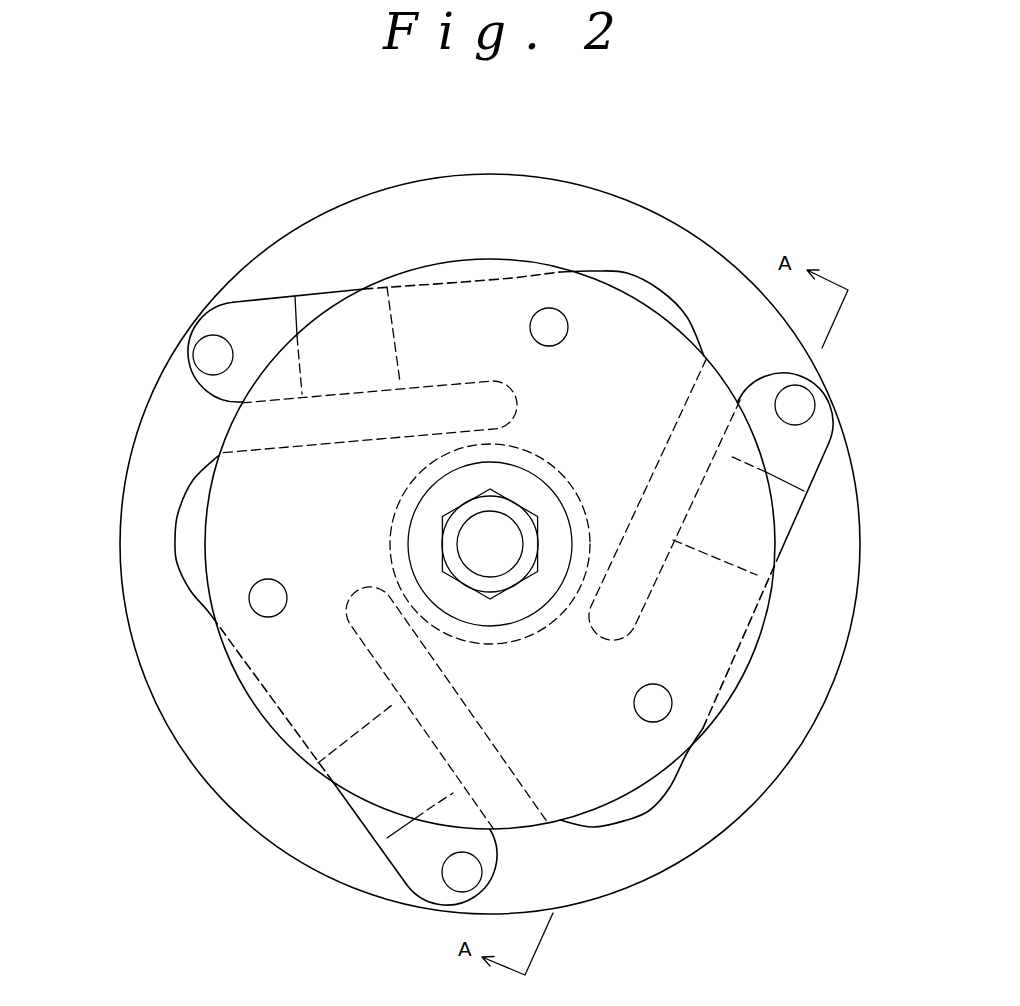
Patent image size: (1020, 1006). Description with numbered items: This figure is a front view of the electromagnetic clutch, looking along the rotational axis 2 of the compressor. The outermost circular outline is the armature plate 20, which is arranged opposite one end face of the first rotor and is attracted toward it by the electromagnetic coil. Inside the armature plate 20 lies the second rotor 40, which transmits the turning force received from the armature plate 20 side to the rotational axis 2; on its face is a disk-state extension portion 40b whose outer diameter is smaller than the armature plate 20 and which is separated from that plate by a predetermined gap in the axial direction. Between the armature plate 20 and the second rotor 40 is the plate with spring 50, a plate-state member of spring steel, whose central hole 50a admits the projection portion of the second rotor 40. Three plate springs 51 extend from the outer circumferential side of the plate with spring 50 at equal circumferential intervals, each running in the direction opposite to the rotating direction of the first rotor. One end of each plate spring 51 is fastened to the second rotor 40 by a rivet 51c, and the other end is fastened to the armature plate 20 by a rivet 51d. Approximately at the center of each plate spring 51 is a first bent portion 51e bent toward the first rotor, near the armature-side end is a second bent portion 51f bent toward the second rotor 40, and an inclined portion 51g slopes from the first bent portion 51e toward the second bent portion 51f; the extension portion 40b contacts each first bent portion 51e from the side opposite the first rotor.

The rotational axis 2 is at (493, 543).
The armature plate 20 is at (691, 237).
The second rotor 40 is at (767, 608).
The extension portion 40b is at (507, 800).
The plate with spring 50 is at (650, 810).
The hole 50a is at (390, 548).
The plate spring 51 is at (463, 280).
The rivet 51c is at (549, 327).
The rivet 51d is at (207, 352).
The first bent portion 51e is at (387, 287).
The second bent portion 51f is at (296, 336).
The inclined portion 51g is at (317, 307).